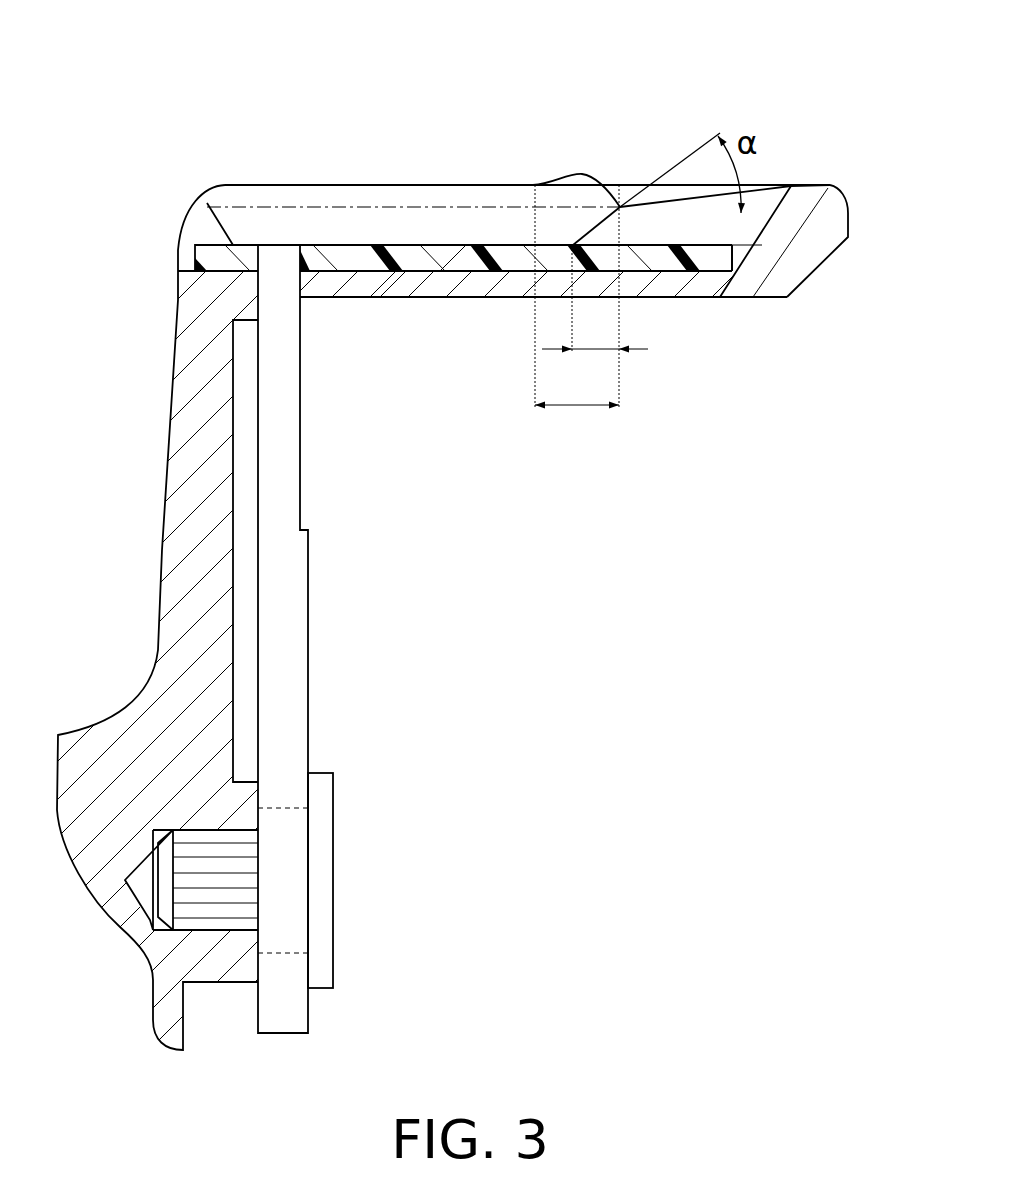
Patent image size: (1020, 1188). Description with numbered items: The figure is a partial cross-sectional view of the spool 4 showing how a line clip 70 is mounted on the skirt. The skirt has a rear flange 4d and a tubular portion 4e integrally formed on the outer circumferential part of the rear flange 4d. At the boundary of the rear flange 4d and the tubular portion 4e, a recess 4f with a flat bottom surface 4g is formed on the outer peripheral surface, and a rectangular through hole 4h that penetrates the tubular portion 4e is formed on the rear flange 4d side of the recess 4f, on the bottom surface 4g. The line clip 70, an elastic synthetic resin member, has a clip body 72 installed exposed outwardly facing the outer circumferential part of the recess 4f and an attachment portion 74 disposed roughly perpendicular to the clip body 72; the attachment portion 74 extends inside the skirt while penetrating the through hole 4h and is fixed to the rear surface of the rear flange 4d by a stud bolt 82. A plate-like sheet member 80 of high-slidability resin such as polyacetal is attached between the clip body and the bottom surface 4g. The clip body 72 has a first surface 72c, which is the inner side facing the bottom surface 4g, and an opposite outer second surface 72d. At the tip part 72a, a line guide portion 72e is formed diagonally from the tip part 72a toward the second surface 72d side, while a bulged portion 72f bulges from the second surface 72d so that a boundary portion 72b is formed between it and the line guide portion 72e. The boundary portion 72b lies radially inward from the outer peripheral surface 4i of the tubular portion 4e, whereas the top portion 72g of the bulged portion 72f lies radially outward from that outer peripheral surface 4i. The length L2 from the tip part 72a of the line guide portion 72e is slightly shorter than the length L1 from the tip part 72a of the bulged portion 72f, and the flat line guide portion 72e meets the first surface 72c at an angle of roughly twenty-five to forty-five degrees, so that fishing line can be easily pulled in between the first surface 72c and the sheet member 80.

The spool 4 is at (160, 292).
The rear flange 4d is at (187, 387).
The tubular portion 4e is at (792, 215).
The recess 4f is at (452, 265).
The bottom surface 4g is at (652, 270).
The through hole 4h is at (392, 290).
The outer peripheral surface 4i is at (752, 190).
The line clip 70 is at (380, 177).
The clip body 72 is at (402, 177).
The tip part 72a is at (637, 187).
The boundary portion 72b is at (621, 205).
The first surface 72c is at (485, 271).
The second surface 72d is at (320, 185).
The line guide portion 72e is at (745, 260).
The bulged portion 72f is at (593, 173).
The top portion 72g is at (577, 180).
The attachment portion 74 is at (279, 583).
The sheet member 80 is at (350, 271).
The stud bolt 82 is at (323, 772).
The length from the tip part of the bulged portion L1 is at (577, 297).
The length from the tip part of the line guide portion L2 is at (595, 296).